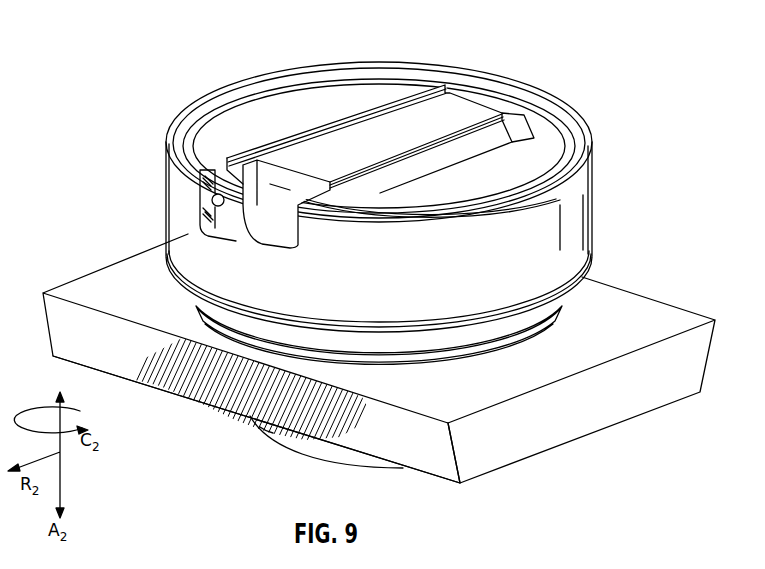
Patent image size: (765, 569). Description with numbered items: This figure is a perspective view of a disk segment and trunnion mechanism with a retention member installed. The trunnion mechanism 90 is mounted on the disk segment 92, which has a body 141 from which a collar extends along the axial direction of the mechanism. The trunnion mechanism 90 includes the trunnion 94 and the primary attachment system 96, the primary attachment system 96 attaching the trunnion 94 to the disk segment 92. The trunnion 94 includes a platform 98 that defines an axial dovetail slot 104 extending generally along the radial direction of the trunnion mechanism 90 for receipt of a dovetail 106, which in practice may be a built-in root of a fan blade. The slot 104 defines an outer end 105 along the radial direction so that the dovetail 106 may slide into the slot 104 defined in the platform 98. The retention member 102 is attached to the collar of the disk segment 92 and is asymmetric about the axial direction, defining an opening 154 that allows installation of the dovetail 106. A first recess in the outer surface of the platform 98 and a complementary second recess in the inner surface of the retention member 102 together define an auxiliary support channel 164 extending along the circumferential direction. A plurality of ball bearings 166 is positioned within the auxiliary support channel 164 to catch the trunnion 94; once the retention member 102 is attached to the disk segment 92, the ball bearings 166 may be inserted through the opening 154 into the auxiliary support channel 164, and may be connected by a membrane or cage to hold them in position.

The trunnion mechanism 90 is at (543, 151).
The disk segment 92 is at (652, 314).
The trunnion 94 is at (381, 60).
The primary attachment system 96 is at (255, 432).
The platform 98 is at (240, 125).
The retention member 102 is at (537, 240).
The axial dovetail slot 104 is at (277, 192).
The outer end 105 is at (237, 230).
The dovetail 106 is at (430, 105).
The body 141 is at (470, 387).
The opening 154 is at (205, 185).
The auxiliary support channel 164 is at (205, 212).
The ball bearings 166 is at (211, 198).